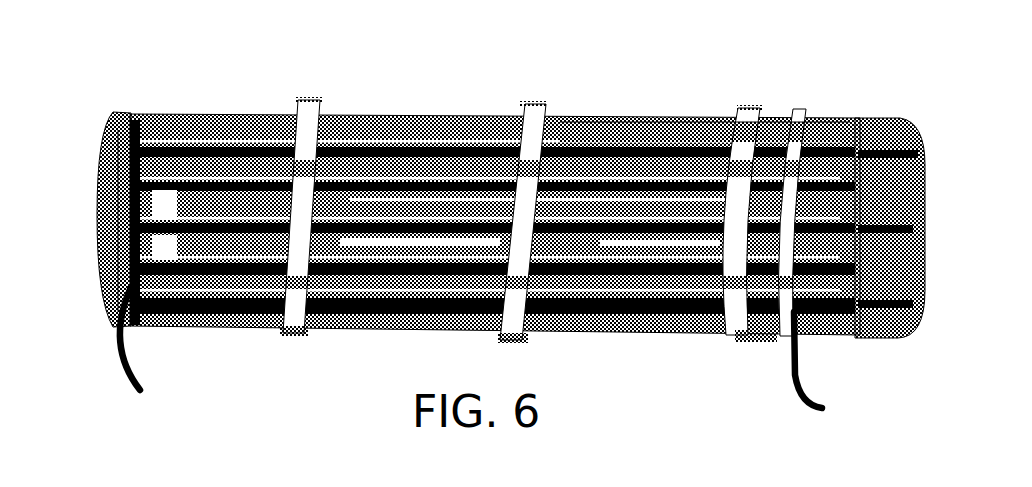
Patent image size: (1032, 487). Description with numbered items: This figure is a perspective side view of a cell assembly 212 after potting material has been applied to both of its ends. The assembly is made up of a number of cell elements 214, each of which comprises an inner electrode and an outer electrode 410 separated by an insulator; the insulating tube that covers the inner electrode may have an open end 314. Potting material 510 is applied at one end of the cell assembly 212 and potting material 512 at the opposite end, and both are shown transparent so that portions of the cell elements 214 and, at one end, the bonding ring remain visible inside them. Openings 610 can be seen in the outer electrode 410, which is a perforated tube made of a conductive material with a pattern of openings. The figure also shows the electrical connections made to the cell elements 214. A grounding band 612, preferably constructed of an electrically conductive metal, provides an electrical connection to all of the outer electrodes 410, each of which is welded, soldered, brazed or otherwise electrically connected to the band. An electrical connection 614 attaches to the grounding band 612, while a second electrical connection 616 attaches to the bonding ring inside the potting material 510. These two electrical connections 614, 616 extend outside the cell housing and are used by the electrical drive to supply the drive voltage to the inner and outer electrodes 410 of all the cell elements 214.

The cell assembly 212 is at (393, 84).
The cell elements 214 is at (670, 122).
The open end 314 is at (125, 192).
The outer electrode 410 is at (603, 122).
The potting material 510 is at (185, 117).
The potting material 512 is at (877, 125).
The openings 610 is at (483, 125).
The grounding band 612 is at (800, 125).
The electrical connection 614 is at (813, 405).
The electrical connection 616 is at (135, 390).